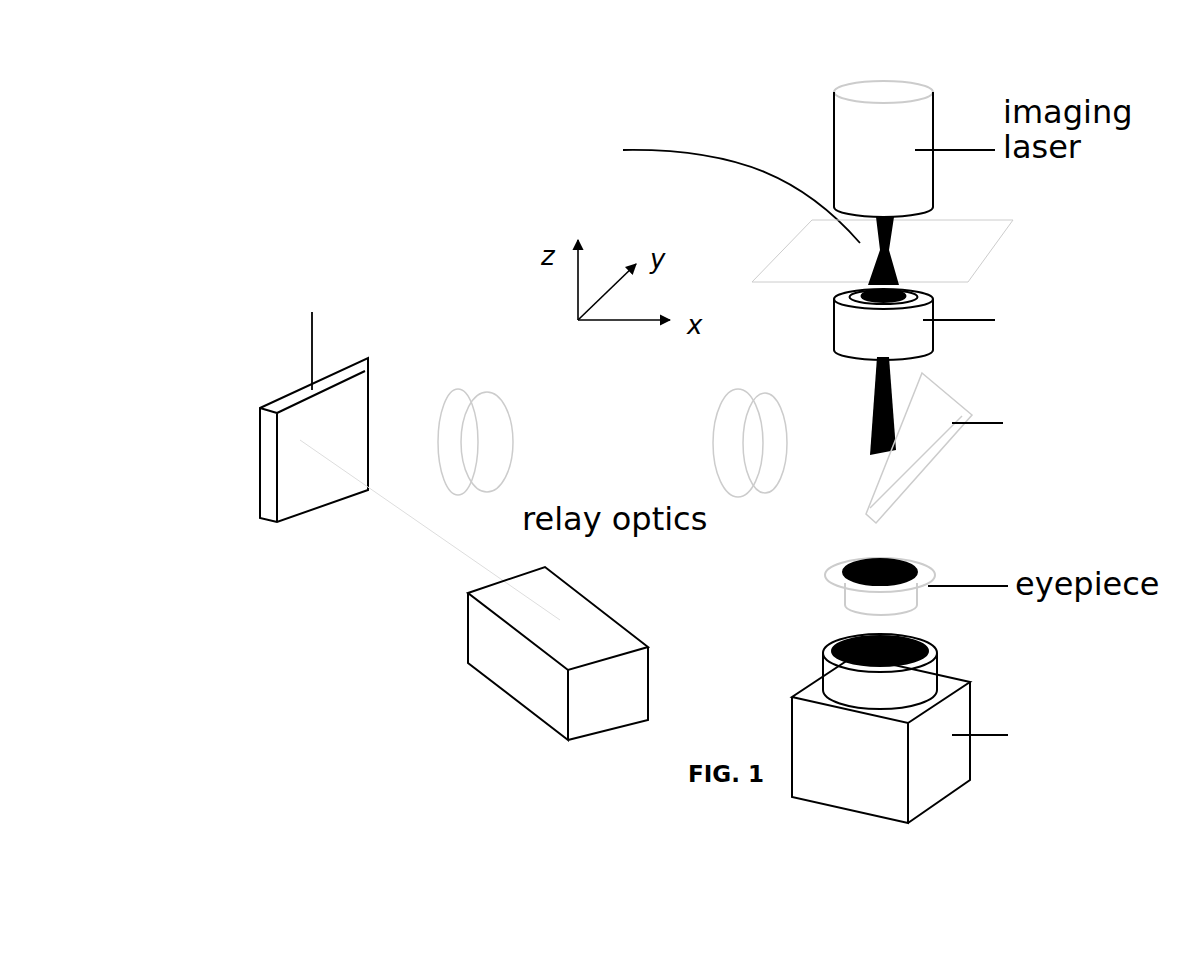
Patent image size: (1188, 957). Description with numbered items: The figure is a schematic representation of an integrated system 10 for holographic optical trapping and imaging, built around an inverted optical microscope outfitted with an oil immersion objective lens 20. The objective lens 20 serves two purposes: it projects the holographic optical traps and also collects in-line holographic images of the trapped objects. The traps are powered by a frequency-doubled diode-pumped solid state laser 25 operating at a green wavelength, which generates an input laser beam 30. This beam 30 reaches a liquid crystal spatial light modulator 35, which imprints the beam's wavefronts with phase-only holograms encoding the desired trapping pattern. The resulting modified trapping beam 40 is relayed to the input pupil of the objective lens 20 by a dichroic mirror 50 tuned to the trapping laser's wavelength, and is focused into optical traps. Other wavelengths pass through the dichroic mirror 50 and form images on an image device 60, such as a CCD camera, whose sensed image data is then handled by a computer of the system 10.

The integrated system 10 is at (368, 160).
The objective lens 20 is at (918, 310).
The solid state laser 25 is at (608, 697).
The input laser beam 30 is at (852, 287).
The liquid crystal spatial light modulator 35 is at (288, 430).
The modified trapping beam 40 is at (387, 530).
The dichroic mirror 50 is at (900, 465).
The image device 60 is at (915, 765).